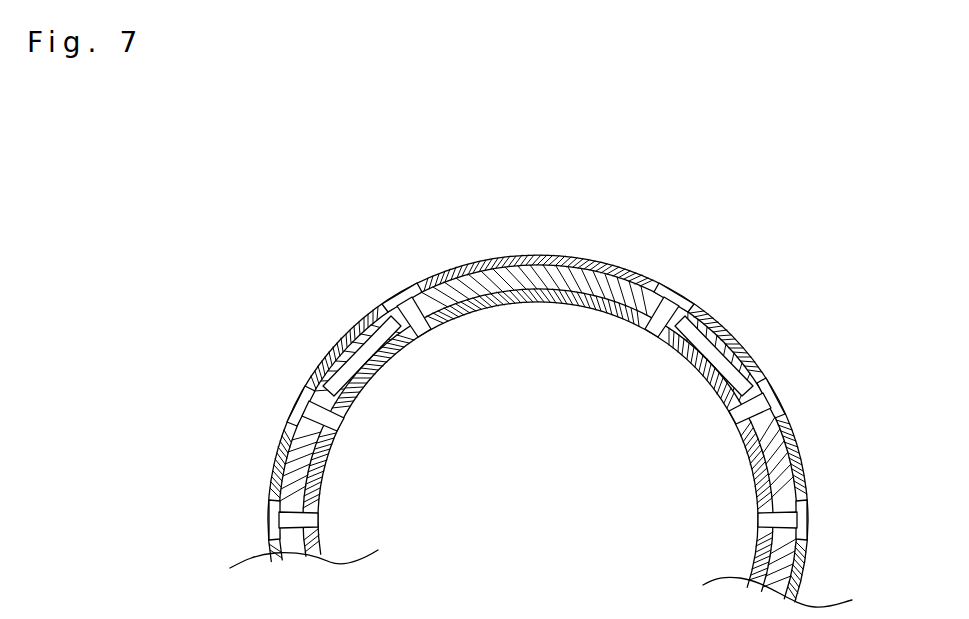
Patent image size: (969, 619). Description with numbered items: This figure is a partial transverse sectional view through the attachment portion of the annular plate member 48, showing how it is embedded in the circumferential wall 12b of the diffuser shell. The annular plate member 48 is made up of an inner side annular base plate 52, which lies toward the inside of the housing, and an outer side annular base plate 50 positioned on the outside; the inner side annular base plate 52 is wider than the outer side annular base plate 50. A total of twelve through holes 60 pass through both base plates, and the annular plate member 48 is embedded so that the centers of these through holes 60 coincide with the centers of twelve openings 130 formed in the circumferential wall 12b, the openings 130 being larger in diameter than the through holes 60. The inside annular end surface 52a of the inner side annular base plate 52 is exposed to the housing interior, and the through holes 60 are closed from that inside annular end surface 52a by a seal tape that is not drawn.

The circumferential wall 12b is at (724, 330).
The annular plate member 48 is at (559, 287).
The outer side annular base plate 50 is at (634, 273).
The inner side annular base plate 52 is at (716, 390).
The inside annular end surface 52a is at (325, 457).
The through hole 60 is at (421, 318).
The opening 130 is at (309, 392).